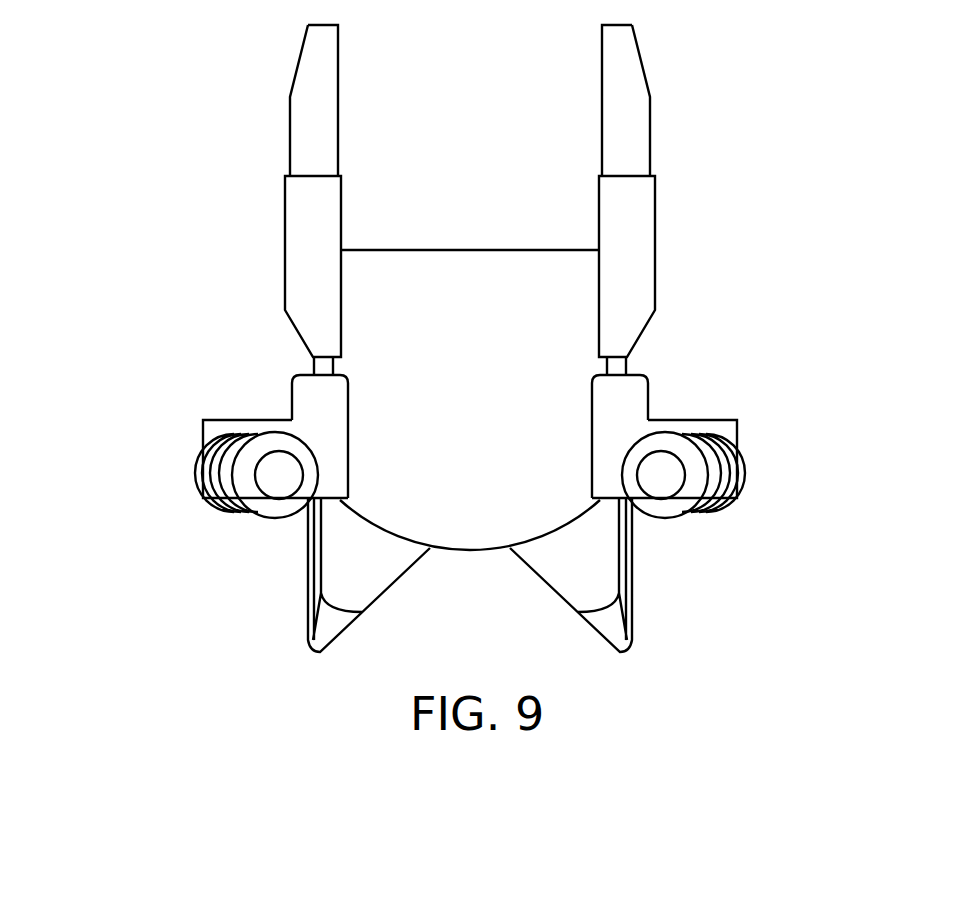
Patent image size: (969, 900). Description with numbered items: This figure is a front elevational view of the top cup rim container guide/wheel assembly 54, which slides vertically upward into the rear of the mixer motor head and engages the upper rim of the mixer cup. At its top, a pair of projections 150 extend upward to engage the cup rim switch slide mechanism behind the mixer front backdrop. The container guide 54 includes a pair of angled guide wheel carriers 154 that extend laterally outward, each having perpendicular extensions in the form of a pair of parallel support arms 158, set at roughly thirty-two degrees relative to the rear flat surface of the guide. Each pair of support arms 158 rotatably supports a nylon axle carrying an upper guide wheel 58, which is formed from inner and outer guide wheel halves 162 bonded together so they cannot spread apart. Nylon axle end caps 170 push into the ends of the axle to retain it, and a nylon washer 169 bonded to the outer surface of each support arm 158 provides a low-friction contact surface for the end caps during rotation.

The projections 150 is at (312, 76).
The top cup rim container guide/wheel assembly 54 is at (470, 265).
The angled guide wheel carriers 154 is at (298, 388).
The upper guide wheel 58 is at (178, 460).
The nylon washer 169 is at (320, 478).
The nylon axle end caps 170 is at (272, 484).
The parallel support arms 158 is at (242, 422).
The inner and outer guide wheel halves 162 is at (222, 484).